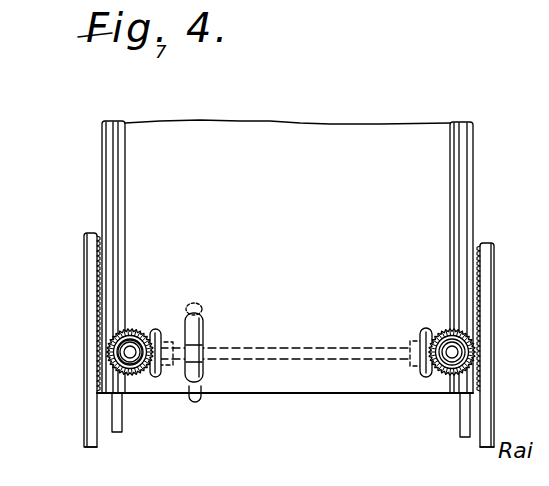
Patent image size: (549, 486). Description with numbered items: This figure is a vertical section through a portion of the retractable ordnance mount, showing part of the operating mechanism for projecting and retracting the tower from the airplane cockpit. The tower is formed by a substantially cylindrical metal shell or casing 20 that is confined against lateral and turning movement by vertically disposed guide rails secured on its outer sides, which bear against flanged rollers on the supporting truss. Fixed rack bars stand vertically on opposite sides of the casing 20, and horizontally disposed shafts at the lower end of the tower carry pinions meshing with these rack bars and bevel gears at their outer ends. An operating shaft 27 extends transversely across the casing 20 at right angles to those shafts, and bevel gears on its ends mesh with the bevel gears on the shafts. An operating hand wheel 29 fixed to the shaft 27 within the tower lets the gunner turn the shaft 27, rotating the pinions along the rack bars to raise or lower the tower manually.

The shell or casing 20 is at (323, 131).
The operating shaft 27 is at (304, 352).
The operating hand wheel 29 is at (203, 322).